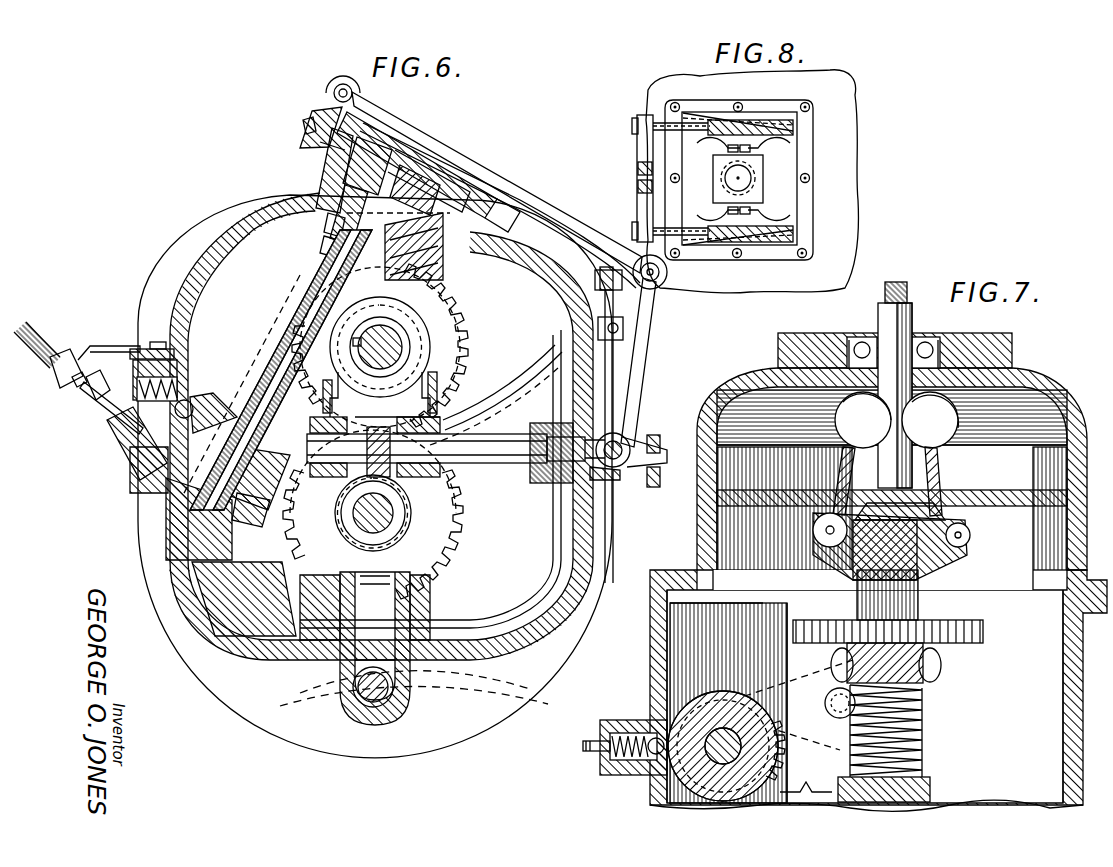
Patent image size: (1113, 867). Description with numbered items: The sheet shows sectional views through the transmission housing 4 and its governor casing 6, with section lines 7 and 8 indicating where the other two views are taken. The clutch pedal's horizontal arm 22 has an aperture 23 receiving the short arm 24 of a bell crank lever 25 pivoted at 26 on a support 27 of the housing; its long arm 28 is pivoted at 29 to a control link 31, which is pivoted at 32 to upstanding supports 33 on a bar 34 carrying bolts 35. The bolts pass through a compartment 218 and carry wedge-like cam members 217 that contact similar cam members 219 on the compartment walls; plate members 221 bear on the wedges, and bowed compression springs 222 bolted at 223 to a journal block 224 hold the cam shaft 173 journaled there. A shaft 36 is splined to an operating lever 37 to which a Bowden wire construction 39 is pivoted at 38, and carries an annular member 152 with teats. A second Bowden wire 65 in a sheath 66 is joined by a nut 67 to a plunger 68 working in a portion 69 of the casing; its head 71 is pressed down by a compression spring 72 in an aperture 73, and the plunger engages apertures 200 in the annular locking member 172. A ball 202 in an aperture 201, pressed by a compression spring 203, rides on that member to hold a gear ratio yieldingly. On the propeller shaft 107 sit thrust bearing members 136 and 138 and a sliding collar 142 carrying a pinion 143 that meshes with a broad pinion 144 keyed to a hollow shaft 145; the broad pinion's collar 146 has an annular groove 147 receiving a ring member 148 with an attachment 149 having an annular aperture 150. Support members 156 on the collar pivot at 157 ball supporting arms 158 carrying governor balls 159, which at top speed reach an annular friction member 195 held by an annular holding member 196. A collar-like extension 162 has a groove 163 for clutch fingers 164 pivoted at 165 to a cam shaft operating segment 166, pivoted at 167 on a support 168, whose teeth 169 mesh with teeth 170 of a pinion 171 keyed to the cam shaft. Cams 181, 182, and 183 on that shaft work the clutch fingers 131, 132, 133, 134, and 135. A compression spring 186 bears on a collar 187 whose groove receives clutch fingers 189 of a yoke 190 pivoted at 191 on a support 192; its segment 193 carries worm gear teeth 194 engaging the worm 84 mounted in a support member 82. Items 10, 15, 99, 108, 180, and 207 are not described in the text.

In FIG. 6, the transmission housing 4 is at (213, 243).
In FIG. 8, the transmission housing 4 is at (843, 168).
In FIG. 7, the transmission housing 4 is at (1075, 665).
In FIG. 6, the governor casing 6 is at (530, 688).
In FIG. 7, the governor casing 6 is at (1068, 408).
In FIG. 6, the section line 7- 7 is at (122, 385).
In FIG. 6, the section line 8- 8 is at (308, 102).
In FIG. 6, the cylinder 10 is at (343, 176).
In FIG. 6, the nozzle 15 is at (58, 378).
In FIG. 6, the horizontally extending arm 22 is at (656, 488).
In FIG. 6, the aperture 23 is at (662, 477).
In FIG. 6, the short arm 24 is at (646, 480).
In FIG. 6, the bell crank lever 25 is at (637, 442).
In FIG. 6, the pivot 26 is at (614, 478).
In FIG. 6, the support 27 is at (594, 483).
In FIG. 6, the long arm 28 is at (638, 372).
In FIG. 6, the pivot 29 is at (660, 282).
In FIG. 6, the control link 31 is at (458, 156).
In FIG. 6, the pivot 32 is at (345, 83).
In FIG. 6, the upstanding supports 33 is at (326, 110).
In FIG. 8, the upstanding supports 33 is at (637, 186).
In FIG. 6, the bar 34 is at (322, 140).
In FIG. 8, the bar 34 is at (638, 147).
In FIG. 6, the bolts 35 is at (327, 148).
In FIG. 8, the bolts 35 is at (660, 118).
In FIG. 6, the shaft 36 is at (492, 465).
In FIG. 6, the operating lever 37 is at (622, 283).
In FIG. 6, the pivot 38 is at (625, 347).
In FIG. 6, the Bowden wire construction 39 is at (625, 328).
In FIG. 6, the Bowden wire 65 is at (22, 328).
In FIG. 6, the sheath 66 is at (40, 353).
In FIG. 6, the nut 67 is at (95, 400).
In FIG. 6, the plunger 68 is at (110, 418).
In FIG. 7, the plunger 68 is at (582, 747).
In FIG. 6, the portion of the casing 69 is at (125, 440).
In FIG. 7, the portion of the casing 69 is at (600, 762).
In FIG. 6, the head 71 is at (150, 480).
In FIG. 6, the compression spring 72 is at (115, 428).
In FIG. 6, the aperture 73 is at (138, 442).
In FIG. 6, the support member 82 is at (402, 702).
In FIG. 6, the worm 84 is at (372, 705).
In FIG. 6, the key 99 is at (370, 362).
In FIG. 6, the propeller shaft 107 is at (394, 516).
In FIG. 7, the propeller shaft 107 is at (905, 437).
In FIG. 7, the ball bearing 108 is at (928, 342).
In FIG. 6, the clutch finger 131 is at (428, 290).
In FIG. 6, the clutch finger 132 is at (433, 276).
In FIG. 6, the clutch finger 133 is at (438, 262).
In FIG. 6, the clutch finger 134 is at (440, 248).
In FIG. 6, the clutch finger 135 is at (445, 228).
In FIG. 7, the thrust bearing member 136 is at (935, 500).
In FIG. 7, the thrust bearing member 138 is at (945, 517).
In FIG. 7, the collar 142 is at (918, 610).
In FIG. 6, the pinion 143 is at (466, 530).
In FIG. 7, the pinion 143 is at (976, 632).
In FIG. 6, the broad pinion 144 is at (468, 346).
In FIG. 6, the hollow shaft 145 is at (375, 325).
In FIG. 6, the collar 146 is at (432, 290).
In FIG. 6, the annular groove 147 is at (394, 300).
In FIG. 6, the ring member 148 is at (455, 328).
In FIG. 6, the attachment 149 is at (440, 405).
In FIG. 6, the annular aperture 150 is at (350, 467).
In FIG. 6, the annular member 152 is at (397, 470).
In FIG. 7, the support members 156 is at (950, 548).
In FIG. 7, the pivot 157 is at (970, 536).
In FIG. 7, the ball supporting arms 158 is at (849, 469).
In FIG. 7, the governor balls 159 is at (845, 425).
In FIG. 6, the collar-like extension 162 is at (462, 511).
In FIG. 7, the collar-like extension 162 is at (925, 663).
In FIG. 7, the annular groove 163 is at (920, 683).
In FIG. 6, the clutch fingers 164 is at (400, 541).
In FIG. 7, the clutch fingers 164 is at (832, 657).
In FIG. 6, the pivot 165 is at (320, 603).
In FIG. 7, the pivot 165 is at (925, 660).
In FIG. 6, the cam shaft operating segment 166 is at (290, 515).
In FIG. 7, the cam shaft operating segment 166 is at (830, 665).
In FIG. 6, the pivot 167 is at (292, 530).
In FIG. 7, the pivot 167 is at (826, 706).
In FIG. 6, the support 168 is at (305, 675).
In FIG. 7, the support 168 is at (810, 745).
In FIG. 6, the teeth 169 is at (205, 572).
In FIG. 7, the teeth 169 is at (808, 784).
In FIG. 6, the teeth 170 is at (157, 505).
In FIG. 7, the teeth 170 is at (740, 802).
In FIG. 6, the pinion 171 is at (165, 515).
In FIG. 6, the annular locking member 172 is at (215, 400).
In FIG. 7, the annular locking member 172 is at (655, 780).
In FIG. 6, the cam shaft 173 is at (272, 360).
In FIG. 8, the cam shaft 173 is at (752, 178).
In FIG. 7, the cam shaft 173 is at (778, 742).
In FIG. 6, the collar 180 is at (400, 555).
In FIG. 6, the cam member 181 is at (328, 244).
In FIG. 6, the cam member 182 is at (327, 222).
In FIG. 6, the cam member 183 is at (345, 200).
In FIG. 7, the compression spring 186 is at (918, 722).
In FIG. 7, the collar 187 is at (916, 777).
In FIG. 7, the clutch fingers 189 is at (930, 785).
In FIG. 6, the yoke 190 is at (405, 590).
In FIG. 7, the yoke 190 is at (930, 792).
In FIG. 6, the pivot 191 is at (405, 600).
In FIG. 6, the support 192 is at (395, 612).
In FIG. 6, the segment 193 is at (380, 622).
In FIG. 6, the worm gear teeth 194 is at (355, 682).
In FIG. 6, the annular friction member 195 is at (559, 517).
In FIG. 7, the annular friction member 195 is at (1078, 470).
In FIG. 6, the annular holding member 196 is at (552, 540).
In FIG. 7, the annular holding member 196 is at (1078, 502).
In FIG. 6, the apertures 200 is at (137, 505).
In FIG. 6, the aperture 201 is at (150, 352).
In FIG. 7, the aperture 201 is at (612, 770).
In FIG. 6, the ball 202 is at (188, 392).
In FIG. 7, the ball 202 is at (632, 722).
In FIG. 6, the compression spring 203 is at (180, 362).
In FIG. 7, the compression spring 203 is at (618, 720).
In FIG. 6, the sector 207 is at (480, 376).
In FIG. 8, the wedge-like cam members 217 is at (722, 124).
In FIG. 6, the compartment 218 is at (412, 162).
In FIG. 8, the compartment 218 is at (688, 108).
In FIG. 8, the cam members 219 is at (770, 118).
In FIG. 6, the plate members 221 is at (372, 155).
In FIG. 8, the plate members 221 is at (793, 143).
In FIG. 6, the bowed compression springs 222 is at (395, 165).
In FIG. 8, the bowed compression springs 222 is at (762, 179).
In FIG. 8, the bolts 223 is at (720, 182).
In FIG. 6, the journal block 224 is at (440, 165).
In FIG. 8, the journal block 224 is at (713, 178).